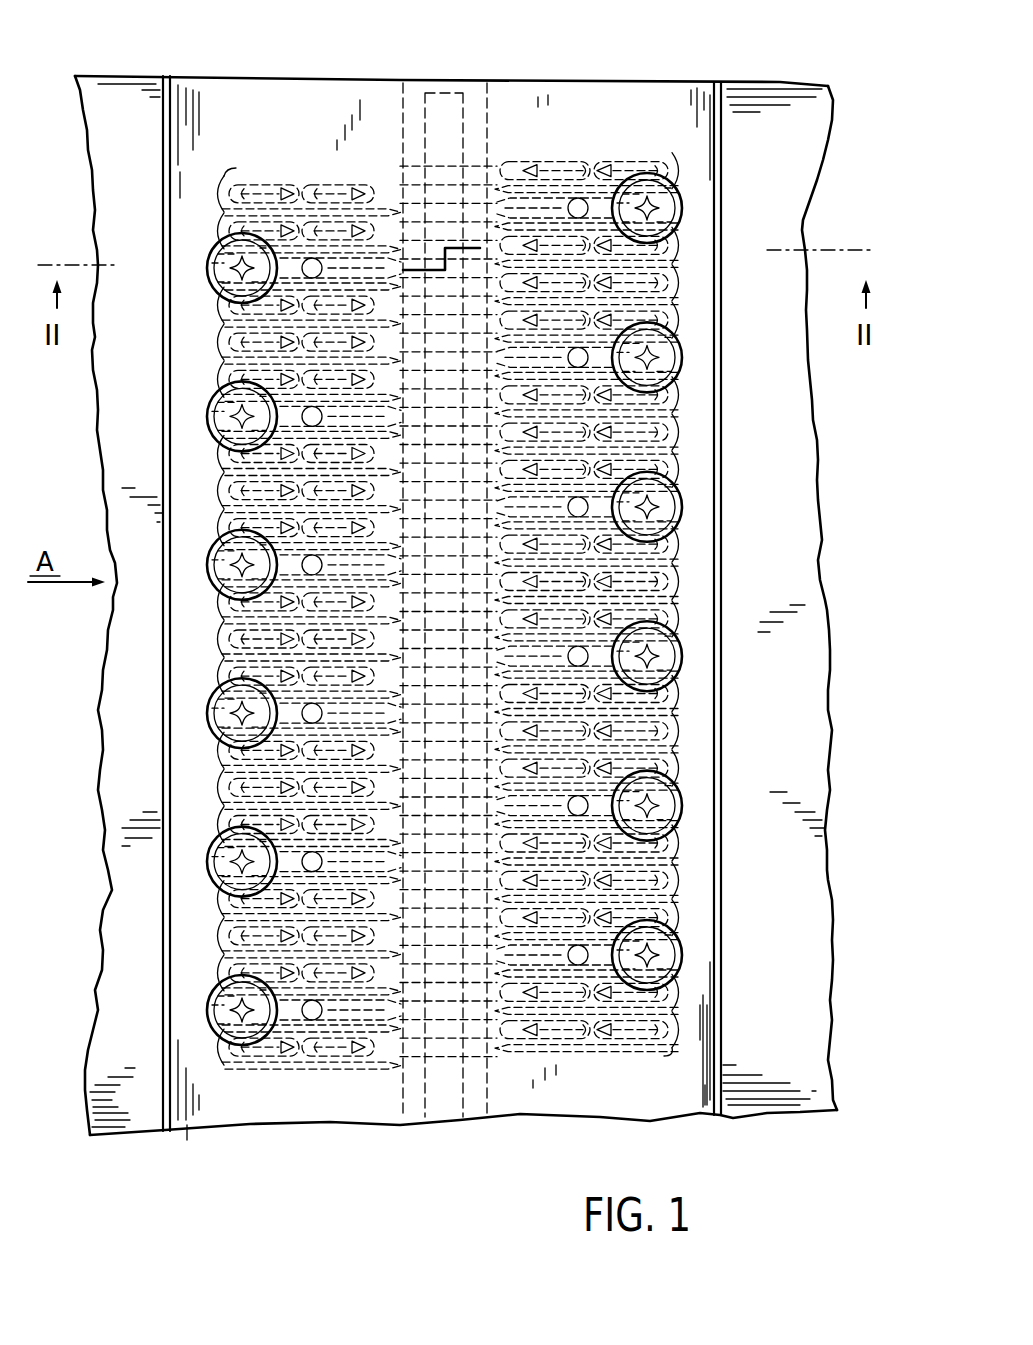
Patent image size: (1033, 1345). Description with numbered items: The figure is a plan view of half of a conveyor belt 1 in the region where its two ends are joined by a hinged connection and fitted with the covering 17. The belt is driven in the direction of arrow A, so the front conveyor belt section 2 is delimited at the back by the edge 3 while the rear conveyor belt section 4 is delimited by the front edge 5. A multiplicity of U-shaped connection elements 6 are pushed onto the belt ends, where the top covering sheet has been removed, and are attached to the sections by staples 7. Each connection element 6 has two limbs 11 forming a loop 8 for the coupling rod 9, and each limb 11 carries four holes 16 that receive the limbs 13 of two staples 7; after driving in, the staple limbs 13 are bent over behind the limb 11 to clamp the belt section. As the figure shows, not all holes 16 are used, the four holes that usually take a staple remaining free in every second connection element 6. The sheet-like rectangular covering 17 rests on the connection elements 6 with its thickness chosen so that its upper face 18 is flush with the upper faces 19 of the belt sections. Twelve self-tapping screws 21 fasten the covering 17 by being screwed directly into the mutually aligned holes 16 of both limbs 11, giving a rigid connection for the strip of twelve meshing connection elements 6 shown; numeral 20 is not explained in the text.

The conveyor belt 1 is at (700, 53).
The front conveyor belt section 2 is at (772, 1100).
The edge 3 is at (476, 1116).
The rear conveyor belt section 4 is at (122, 1113).
The front edge 5 is at (405, 1118).
The connection element 6 is at (201, 209).
The staple 7 is at (198, 672).
The loop 8 is at (440, 146).
The coupling rod 9 is at (455, 120).
The limb 11 is at (228, 215).
The staple limb 13 is at (673, 575).
The hole 16 is at (650, 160).
The covering 17 is at (287, 92).
The upper face 18 is at (628, 1087).
The upper face 19 is at (141, 792).
The right scalloped edge 20 is at (692, 716).
The screw 21 is at (662, 507).